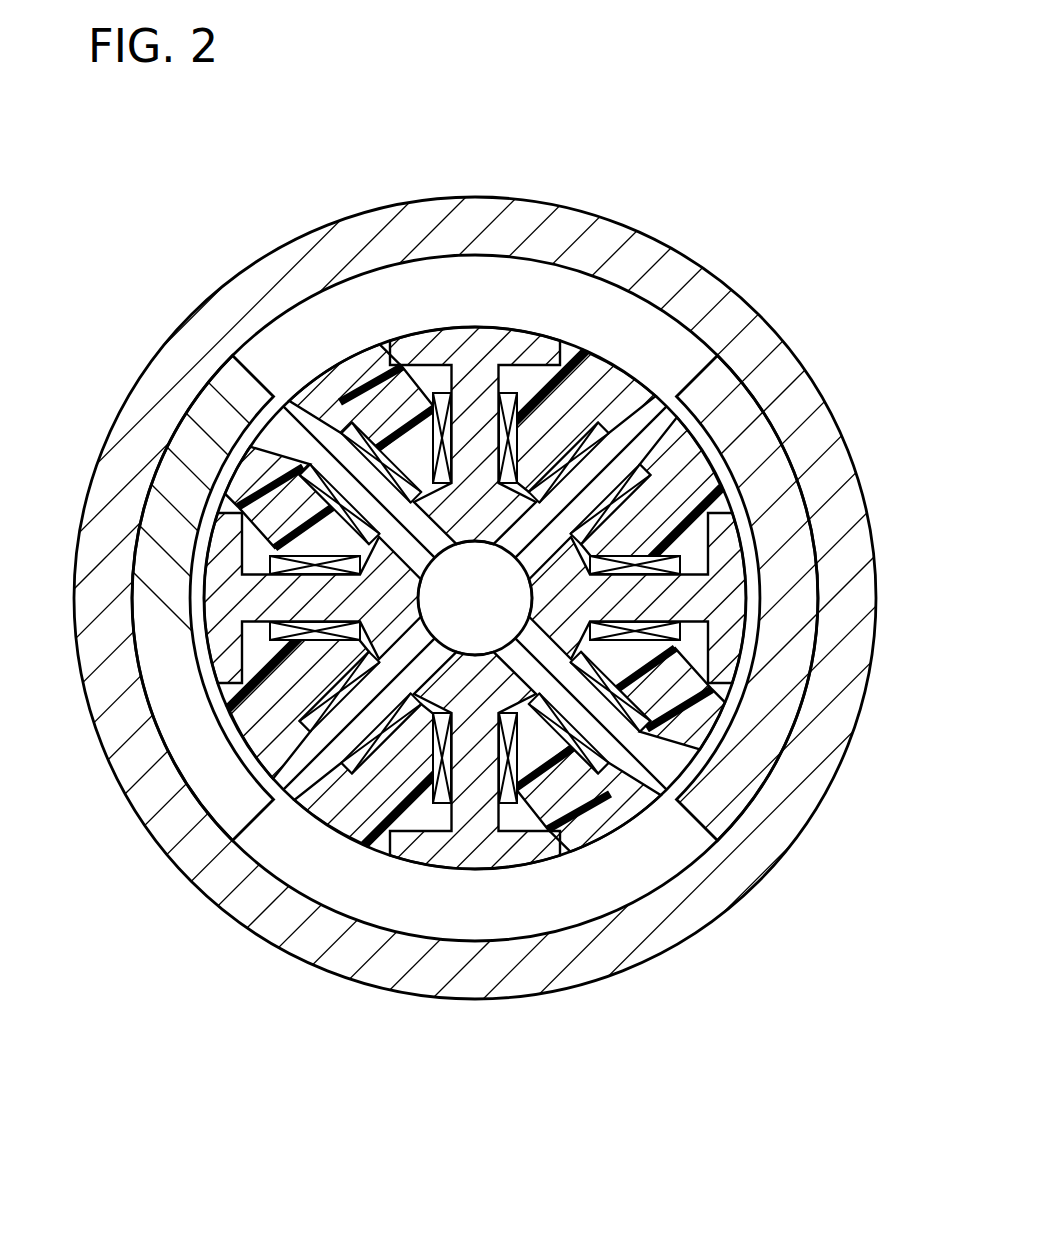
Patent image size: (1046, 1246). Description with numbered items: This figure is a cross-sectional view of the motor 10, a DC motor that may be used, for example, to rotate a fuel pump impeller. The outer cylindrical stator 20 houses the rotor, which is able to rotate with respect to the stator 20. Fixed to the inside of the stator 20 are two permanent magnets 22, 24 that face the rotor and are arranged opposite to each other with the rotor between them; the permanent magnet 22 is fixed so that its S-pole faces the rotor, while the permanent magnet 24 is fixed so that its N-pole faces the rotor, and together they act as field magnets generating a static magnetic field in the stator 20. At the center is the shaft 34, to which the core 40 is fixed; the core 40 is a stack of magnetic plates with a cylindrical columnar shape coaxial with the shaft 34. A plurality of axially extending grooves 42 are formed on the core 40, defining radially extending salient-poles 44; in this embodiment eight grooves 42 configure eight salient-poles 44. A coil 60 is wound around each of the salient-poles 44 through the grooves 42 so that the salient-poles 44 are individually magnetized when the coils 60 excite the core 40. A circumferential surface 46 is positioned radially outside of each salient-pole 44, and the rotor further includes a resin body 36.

The motor 10 is at (830, 76).
The stator 20 is at (637, 257).
The permanent magnet 22 is at (200, 415).
The permanent magnet 24 is at (710, 393).
The shaft 34 is at (468, 560).
The resin body 36 is at (370, 365).
The core 40 is at (733, 600).
The grooves 42 is at (710, 648).
The salient-poles 44 is at (623, 732).
The circumferential surface 46 is at (640, 748).
The coils 60 is at (588, 760).